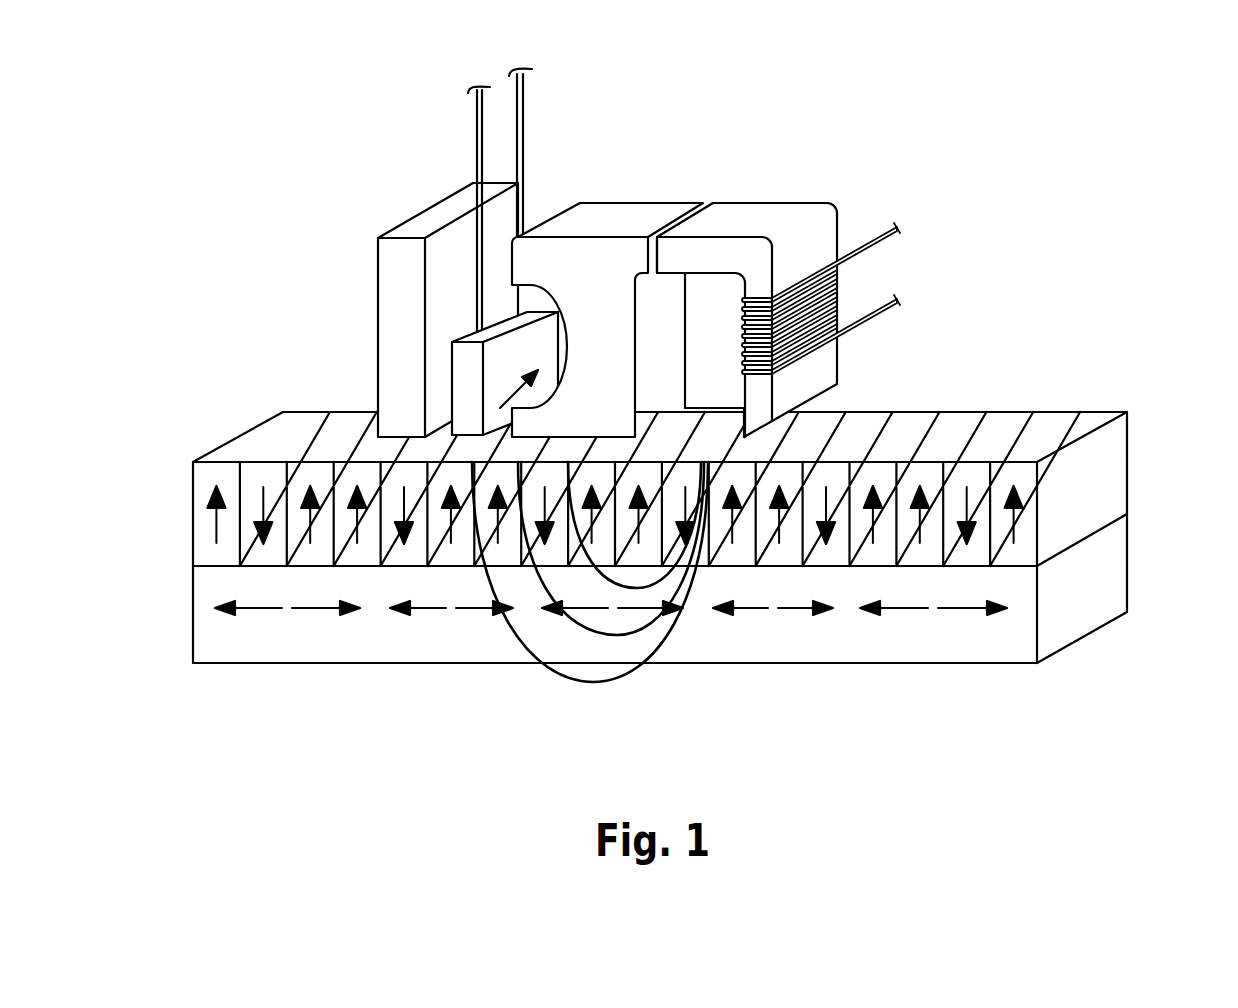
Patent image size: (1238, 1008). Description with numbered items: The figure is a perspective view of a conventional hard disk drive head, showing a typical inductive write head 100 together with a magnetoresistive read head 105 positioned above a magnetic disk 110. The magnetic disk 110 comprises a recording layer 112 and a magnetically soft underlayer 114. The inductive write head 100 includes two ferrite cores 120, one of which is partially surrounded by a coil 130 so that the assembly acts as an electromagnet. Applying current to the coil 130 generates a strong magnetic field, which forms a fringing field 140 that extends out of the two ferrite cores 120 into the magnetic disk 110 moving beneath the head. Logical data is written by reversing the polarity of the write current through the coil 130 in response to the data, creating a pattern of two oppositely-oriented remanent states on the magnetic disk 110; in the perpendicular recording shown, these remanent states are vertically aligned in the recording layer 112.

The inductive write head 100 is at (649, 251).
The magnetoresistive read head 105 is at (473, 352).
The magnetic disk 110 is at (660, 537).
The recording layer 112 is at (184, 517).
The magnetically soft underlayer 114 is at (184, 609).
The ferrite cores 120 is at (631, 211).
The coil 130 is at (841, 287).
The fringing field 140 is at (663, 680).